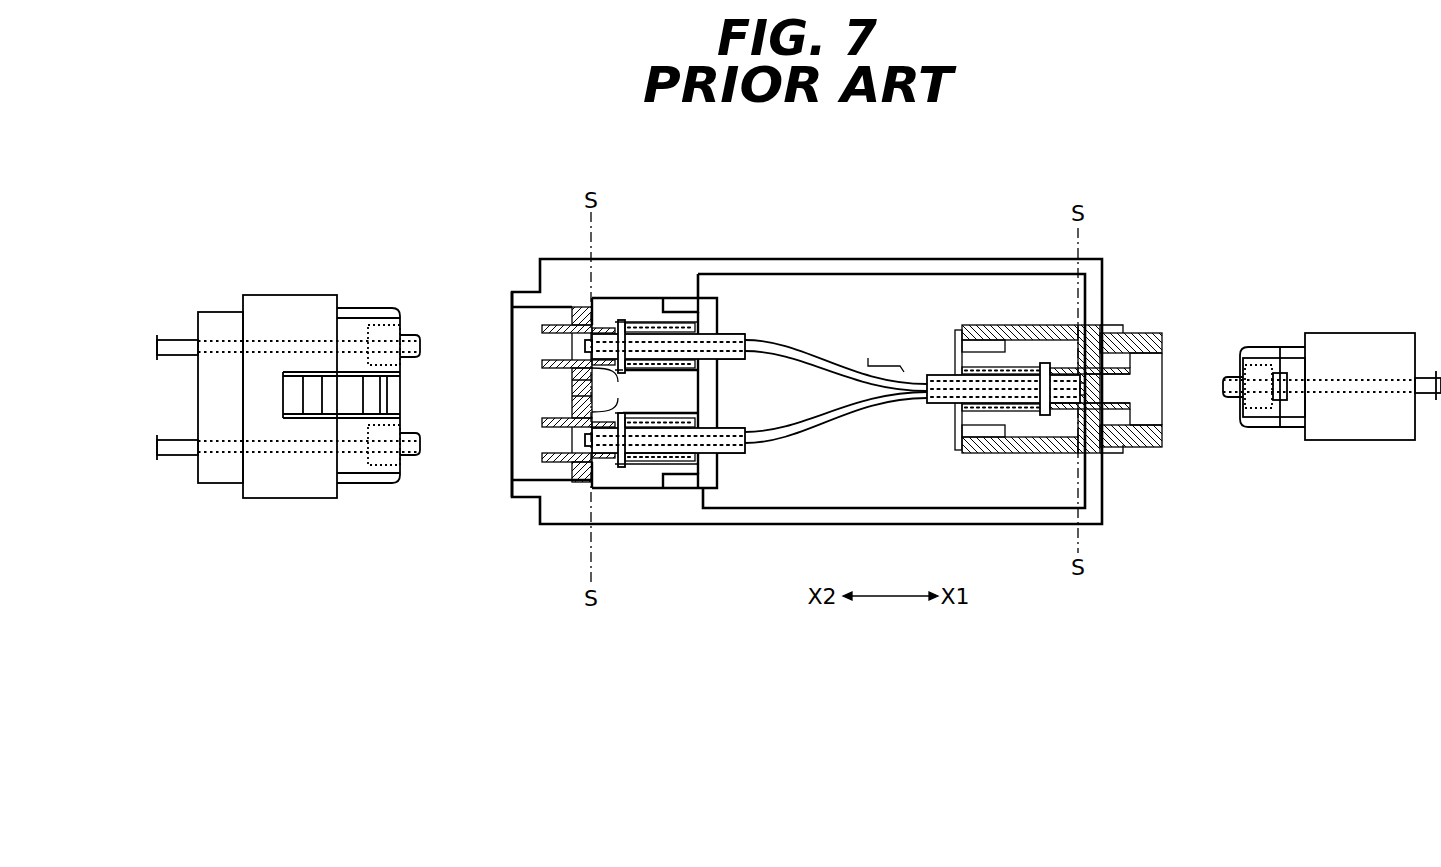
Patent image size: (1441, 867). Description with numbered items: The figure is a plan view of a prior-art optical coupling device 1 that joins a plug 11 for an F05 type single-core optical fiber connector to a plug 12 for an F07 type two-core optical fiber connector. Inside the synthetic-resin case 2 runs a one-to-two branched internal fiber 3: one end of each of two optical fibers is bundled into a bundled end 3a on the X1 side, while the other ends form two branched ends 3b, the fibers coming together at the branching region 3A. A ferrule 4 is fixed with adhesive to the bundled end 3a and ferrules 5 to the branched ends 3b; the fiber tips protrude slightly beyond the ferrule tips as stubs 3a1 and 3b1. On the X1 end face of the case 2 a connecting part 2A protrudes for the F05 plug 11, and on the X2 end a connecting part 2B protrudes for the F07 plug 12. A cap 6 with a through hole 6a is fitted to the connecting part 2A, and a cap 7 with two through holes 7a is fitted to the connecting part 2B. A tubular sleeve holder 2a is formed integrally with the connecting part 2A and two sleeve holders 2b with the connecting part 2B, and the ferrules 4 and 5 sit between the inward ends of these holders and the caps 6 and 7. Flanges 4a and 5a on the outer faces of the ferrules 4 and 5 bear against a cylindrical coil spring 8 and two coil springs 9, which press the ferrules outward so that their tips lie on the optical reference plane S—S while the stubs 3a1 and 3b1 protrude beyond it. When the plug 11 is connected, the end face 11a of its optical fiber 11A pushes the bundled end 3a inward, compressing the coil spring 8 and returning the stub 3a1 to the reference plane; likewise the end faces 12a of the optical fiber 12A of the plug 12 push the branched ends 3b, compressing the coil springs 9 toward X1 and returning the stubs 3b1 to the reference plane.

The optical coupling device 1 is at (959, 228).
The case 2 is at (862, 258).
The connecting part 2A is at (1155, 410).
The connecting part 2B is at (514, 470).
The sleeve holder 2a is at (1130, 330).
The sleeve holder 2b is at (552, 347).
The internal fiber 3 is at (880, 411).
The fiber branching portion 3A is at (868, 358).
The bundled end 3a is at (985, 375).
The stub 3a1 is at (1125, 372).
The branched end 3b is at (604, 320).
The stub 3b1 is at (585, 346).
The ferrule 4 is at (1025, 403).
The flange 4a is at (1046, 415).
The ferrule 5 is at (688, 322).
The flange 5a is at (576, 393).
The cap 6 is at (956, 440).
The through hole 6a is at (955, 372).
The cap 7 is at (710, 472).
The through hole 7a is at (745, 412).
The coil spring 8 is at (993, 412).
The coil spring 9 is at (650, 322).
The plug 11 is at (1363, 332).
The optical fiber 11A is at (1365, 395).
The end face 11a is at (1218, 392).
The plug 12 is at (358, 274).
The optical fiber 12A is at (172, 345).
The end face 12a is at (420, 347).